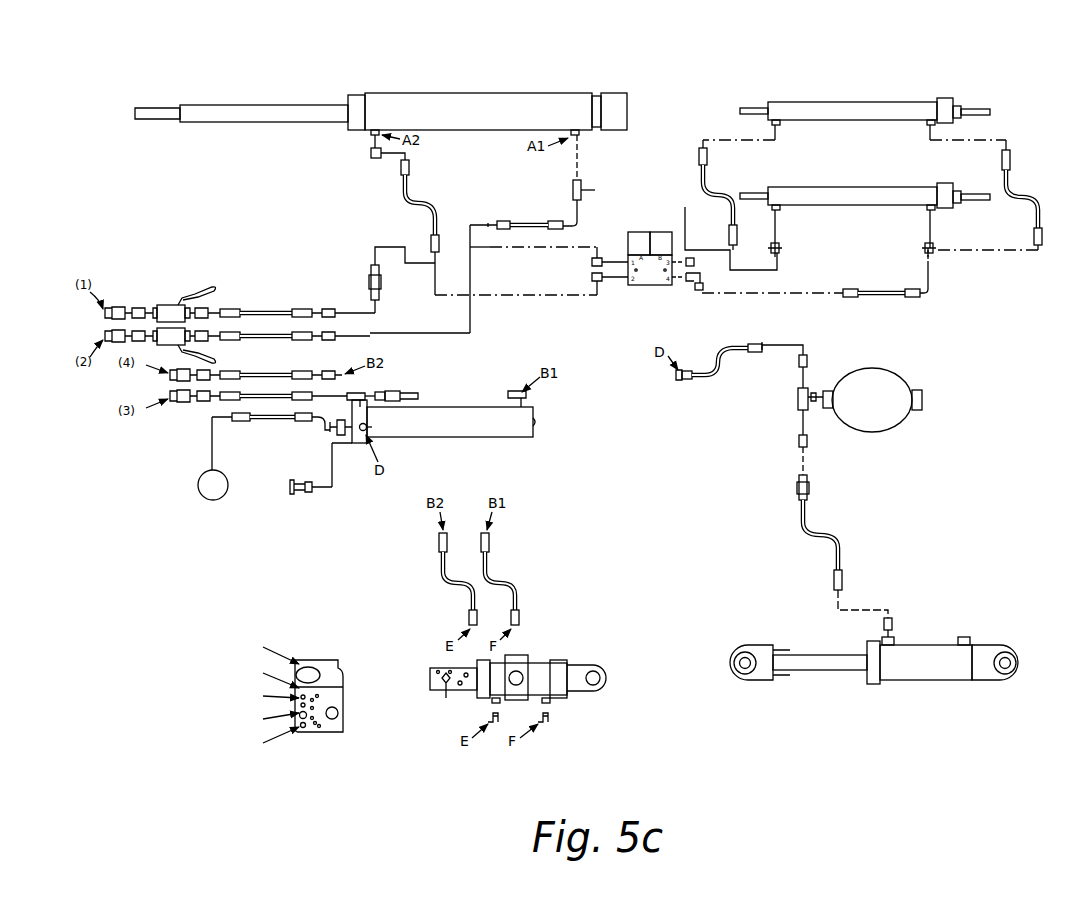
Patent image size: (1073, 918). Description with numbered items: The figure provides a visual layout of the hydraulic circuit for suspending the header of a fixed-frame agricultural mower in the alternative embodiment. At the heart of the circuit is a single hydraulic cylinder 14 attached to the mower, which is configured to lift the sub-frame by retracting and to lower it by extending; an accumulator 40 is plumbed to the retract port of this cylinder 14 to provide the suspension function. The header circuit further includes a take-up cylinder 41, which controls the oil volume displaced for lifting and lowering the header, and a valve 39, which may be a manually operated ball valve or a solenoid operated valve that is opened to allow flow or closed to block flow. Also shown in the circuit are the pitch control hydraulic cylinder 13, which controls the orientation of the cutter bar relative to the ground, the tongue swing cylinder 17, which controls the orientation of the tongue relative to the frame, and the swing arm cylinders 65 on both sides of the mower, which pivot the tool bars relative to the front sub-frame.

The tongue swing cylinder 17 is at (482, 113).
The swing arm cylinders 65 is at (930, 100).
The take-up cylinder 41 is at (510, 428).
The valve 39 is at (296, 497).
The accumulator 40 is at (885, 415).
The hydraulic cylinder 14 is at (926, 665).
The pitch control hydraulic cylinder 13 is at (545, 680).